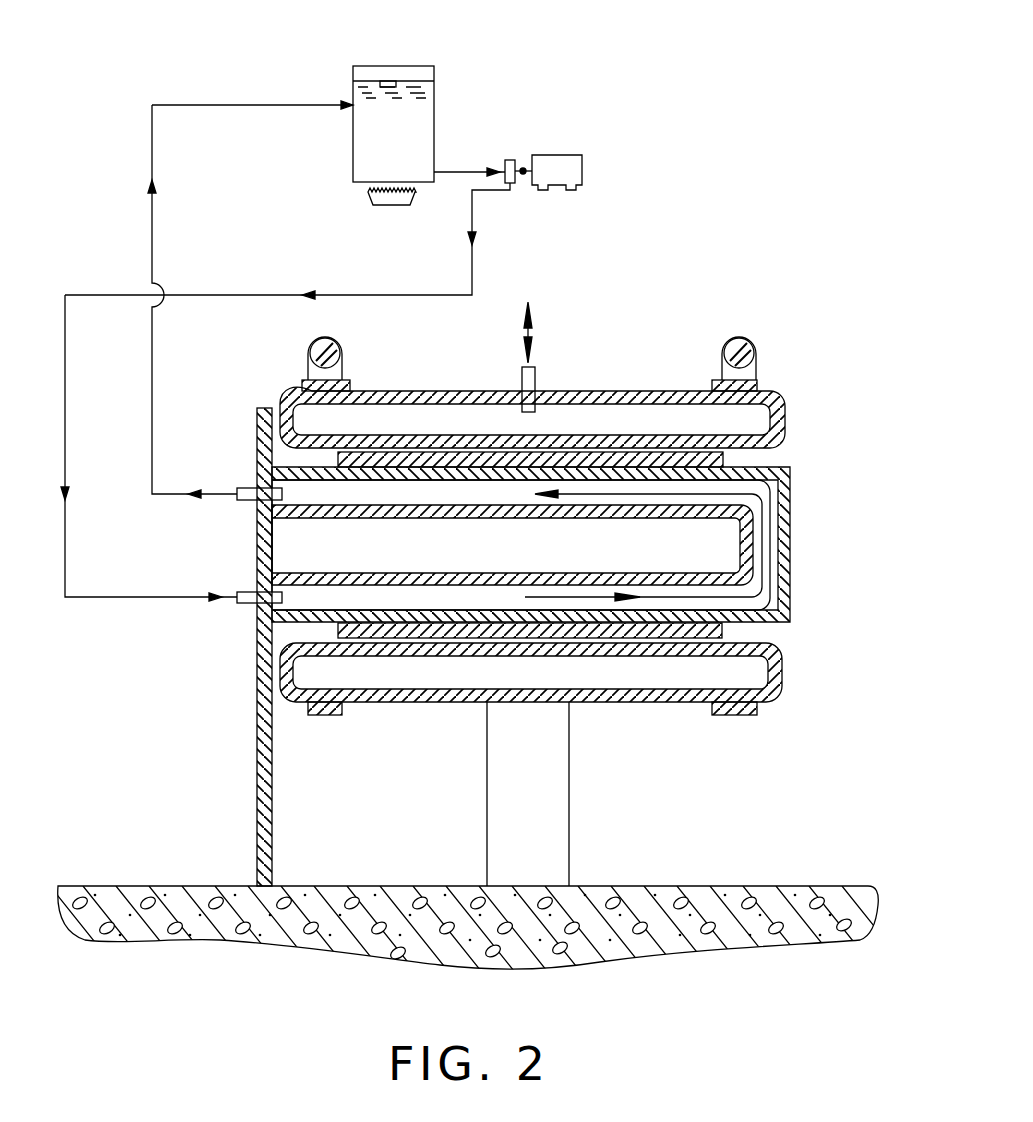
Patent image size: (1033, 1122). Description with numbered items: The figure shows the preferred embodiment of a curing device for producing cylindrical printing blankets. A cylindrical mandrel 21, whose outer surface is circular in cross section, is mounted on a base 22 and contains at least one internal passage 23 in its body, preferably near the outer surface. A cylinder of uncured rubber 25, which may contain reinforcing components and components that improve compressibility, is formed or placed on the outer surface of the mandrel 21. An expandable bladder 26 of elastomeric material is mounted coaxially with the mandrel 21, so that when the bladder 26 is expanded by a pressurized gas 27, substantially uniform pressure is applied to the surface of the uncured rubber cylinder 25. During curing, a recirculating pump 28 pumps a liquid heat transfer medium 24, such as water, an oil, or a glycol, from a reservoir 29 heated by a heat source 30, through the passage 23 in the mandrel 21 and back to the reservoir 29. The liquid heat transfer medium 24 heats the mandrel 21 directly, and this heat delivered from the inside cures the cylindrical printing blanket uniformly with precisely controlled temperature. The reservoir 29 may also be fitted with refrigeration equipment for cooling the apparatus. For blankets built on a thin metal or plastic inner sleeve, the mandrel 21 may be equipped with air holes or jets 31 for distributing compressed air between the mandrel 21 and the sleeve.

The mandrel 21 is at (797, 533).
The base 22 is at (235, 762).
The internal passage 23 is at (758, 603).
The liquid heat transfer medium 24 is at (384, 82).
The cylinder of uncured rubber 25 is at (740, 457).
The expandable bladder 26 is at (790, 385).
The pressurized gas 27 is at (533, 333).
The recirculating pump 28 is at (557, 155).
The reservoir 29 is at (440, 116).
The heat source 30 is at (390, 207).
The air holes or jets 31 is at (747, 622).